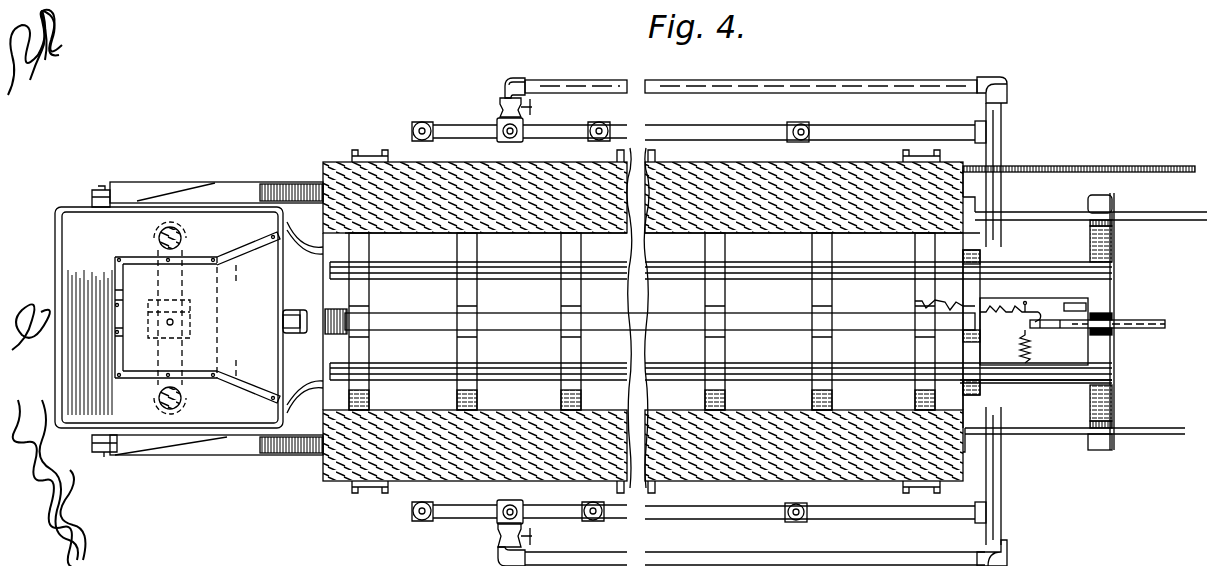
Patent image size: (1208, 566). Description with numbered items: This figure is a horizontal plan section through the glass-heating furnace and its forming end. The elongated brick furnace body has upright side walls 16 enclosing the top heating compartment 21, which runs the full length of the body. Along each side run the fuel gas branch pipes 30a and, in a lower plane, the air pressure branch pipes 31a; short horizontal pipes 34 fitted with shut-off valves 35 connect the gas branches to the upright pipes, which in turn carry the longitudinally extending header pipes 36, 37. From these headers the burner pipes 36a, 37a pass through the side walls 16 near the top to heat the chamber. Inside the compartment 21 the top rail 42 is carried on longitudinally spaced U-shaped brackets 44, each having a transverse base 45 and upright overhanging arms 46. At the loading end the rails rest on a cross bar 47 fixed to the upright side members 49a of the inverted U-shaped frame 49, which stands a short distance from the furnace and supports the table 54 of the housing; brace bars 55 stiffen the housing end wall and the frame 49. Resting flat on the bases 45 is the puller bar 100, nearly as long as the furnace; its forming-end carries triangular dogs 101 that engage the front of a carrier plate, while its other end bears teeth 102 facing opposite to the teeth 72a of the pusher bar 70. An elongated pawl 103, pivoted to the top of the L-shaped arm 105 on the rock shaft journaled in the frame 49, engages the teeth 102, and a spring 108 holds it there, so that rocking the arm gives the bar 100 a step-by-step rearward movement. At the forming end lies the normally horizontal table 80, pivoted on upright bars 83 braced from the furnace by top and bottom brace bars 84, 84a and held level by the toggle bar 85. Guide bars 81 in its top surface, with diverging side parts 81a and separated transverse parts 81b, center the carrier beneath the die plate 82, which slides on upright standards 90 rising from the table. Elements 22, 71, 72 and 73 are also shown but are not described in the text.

The upright side walls 16 is at (543, 171).
The top heating compartment 21 is at (528, 241).
The bracket clip 22 is at (372, 157).
The fuel gas branch pipes 30a is at (596, 80).
The air pressure branch pipes 31a is at (865, 130).
The short horizontal pipes 34 is at (507, 83).
The shut-off valves 35 is at (500, 104).
The header pipe 36 is at (675, 125).
The burner pipe 36a is at (805, 122).
The header pipe 37 is at (463, 122).
The burner pipe 37a is at (496, 142).
The top rail 42 is at (612, 258).
The U-shaped brackets 44 is at (802, 293).
The transverse base 45 is at (485, 352).
The upright overhanging arms 46 is at (478, 397).
The cross bar 47 is at (1114, 292).
The inverted U-shaped frame 49 is at (1118, 202).
The upright side members 49a is at (1112, 229).
The table 54 is at (1147, 165).
The brace bars 55 is at (1178, 212).
The pusher bar 70 is at (1061, 335).
The column 71 is at (973, 322).
The rod 72 is at (1048, 318).
The teeth 72a is at (1158, 320).
The bearing 73 is at (1078, 330).
The table 80 is at (52, 241).
The guide bars 81 is at (109, 262).
The side parts 81a is at (250, 250).
The transverse parts 81b is at (114, 285).
The die plate 82 is at (220, 284).
The upright bars 83 is at (98, 188).
The top brace bar 84 is at (136, 188).
The bottom brace bar 84a is at (201, 184).
The toggle bar 85 is at (305, 343).
The upright standards 90 is at (156, 238).
The puller bar 100 is at (508, 300).
The triangular dogs 101 is at (348, 310).
The teeth 102 is at (918, 302).
The pawl 103 is at (1000, 296).
The L-shaped arm 105 is at (1086, 310).
The spring 108 is at (1020, 352).